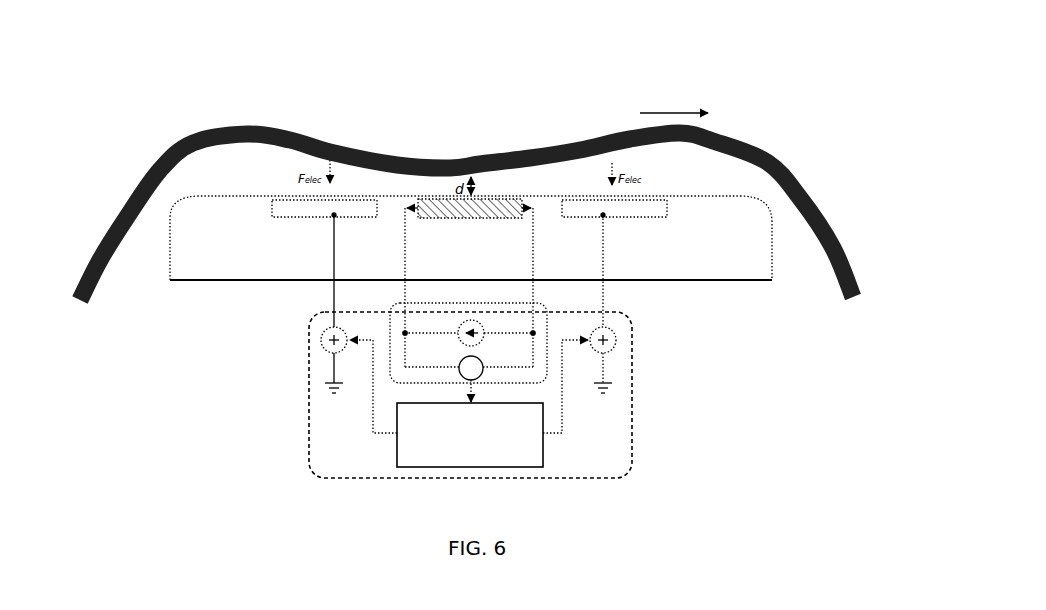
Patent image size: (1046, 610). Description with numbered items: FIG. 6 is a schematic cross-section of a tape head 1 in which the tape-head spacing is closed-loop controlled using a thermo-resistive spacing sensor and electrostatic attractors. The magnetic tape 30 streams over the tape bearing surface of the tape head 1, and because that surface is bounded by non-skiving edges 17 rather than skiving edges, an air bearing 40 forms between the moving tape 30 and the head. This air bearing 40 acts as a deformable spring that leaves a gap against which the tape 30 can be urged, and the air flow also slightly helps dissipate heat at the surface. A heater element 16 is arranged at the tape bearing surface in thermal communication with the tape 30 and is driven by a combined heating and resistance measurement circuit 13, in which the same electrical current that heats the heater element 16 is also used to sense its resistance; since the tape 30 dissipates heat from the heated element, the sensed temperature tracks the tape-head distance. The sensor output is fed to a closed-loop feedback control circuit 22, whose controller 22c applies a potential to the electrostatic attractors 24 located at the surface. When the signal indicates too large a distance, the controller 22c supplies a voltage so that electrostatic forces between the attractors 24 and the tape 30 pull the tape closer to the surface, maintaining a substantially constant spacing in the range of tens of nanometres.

The tape head 1 is at (697, 436).
The combined heating and resistance measurement circuit 13 is at (403, 306).
The heater element 16 is at (520, 217).
The non-skiving edges 17 is at (168, 198).
The closed-loop feedback control circuit 22 is at (308, 458).
The controller 22c is at (543, 467).
The electrostatic attractors 24 is at (670, 203).
The magnetic tape 30 is at (750, 143).
The air bearing 40 is at (224, 160).